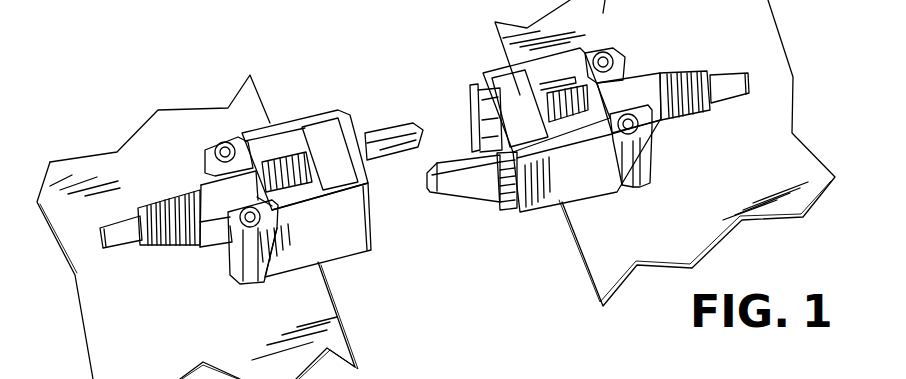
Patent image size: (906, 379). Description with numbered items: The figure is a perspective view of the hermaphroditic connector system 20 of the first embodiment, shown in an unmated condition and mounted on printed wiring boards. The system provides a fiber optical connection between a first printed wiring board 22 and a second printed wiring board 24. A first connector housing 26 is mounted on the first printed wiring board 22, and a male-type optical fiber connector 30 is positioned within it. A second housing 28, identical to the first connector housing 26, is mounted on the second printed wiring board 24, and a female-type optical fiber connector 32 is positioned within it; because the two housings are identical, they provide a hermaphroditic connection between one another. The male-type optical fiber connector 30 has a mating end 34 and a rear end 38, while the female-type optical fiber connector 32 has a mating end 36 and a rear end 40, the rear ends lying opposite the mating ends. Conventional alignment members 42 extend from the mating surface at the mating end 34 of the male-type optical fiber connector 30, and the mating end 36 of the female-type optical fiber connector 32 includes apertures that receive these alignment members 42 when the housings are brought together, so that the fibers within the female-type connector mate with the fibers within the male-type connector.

The hermaphroditic connector system 20 is at (441, 180).
The first printed wiring board 22 is at (665, 189).
The second printed wiring board 24 is at (167, 125).
The first connector housing 26 is at (593, 177).
The second housing 28 is at (294, 257).
The male-type optical fiber connector 30 is at (640, 90).
The female-type optical fiber connector 32 is at (208, 190).
The mating end 34 is at (470, 147).
The mating end 36 is at (383, 177).
The rear end 38 is at (717, 106).
The rear end 40 is at (140, 245).
The alignment members 42 is at (470, 150).